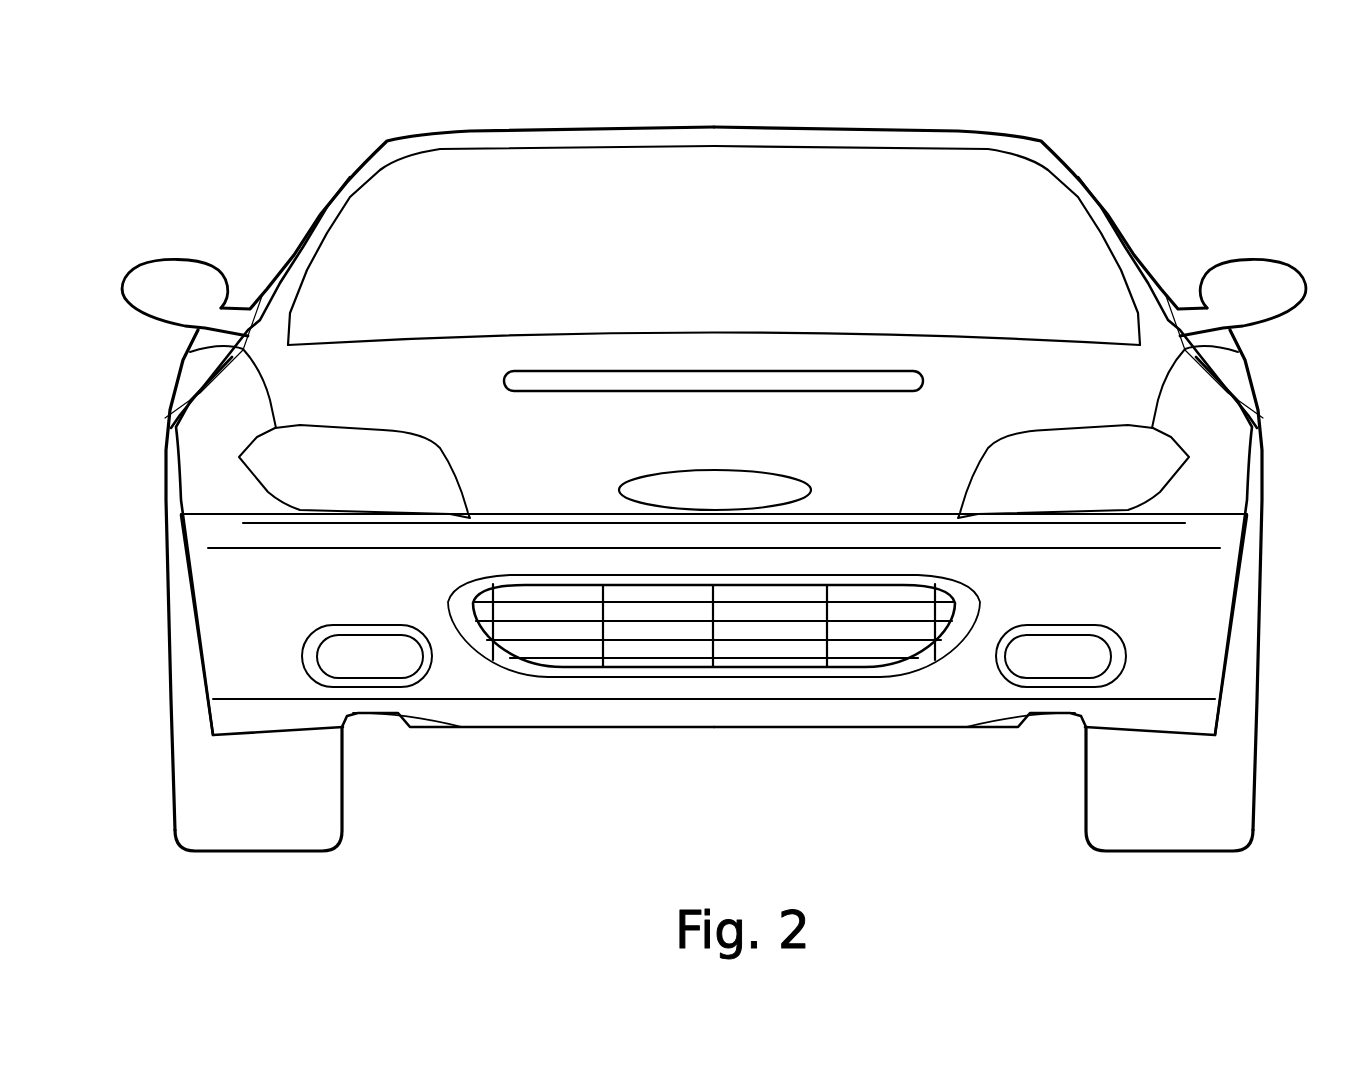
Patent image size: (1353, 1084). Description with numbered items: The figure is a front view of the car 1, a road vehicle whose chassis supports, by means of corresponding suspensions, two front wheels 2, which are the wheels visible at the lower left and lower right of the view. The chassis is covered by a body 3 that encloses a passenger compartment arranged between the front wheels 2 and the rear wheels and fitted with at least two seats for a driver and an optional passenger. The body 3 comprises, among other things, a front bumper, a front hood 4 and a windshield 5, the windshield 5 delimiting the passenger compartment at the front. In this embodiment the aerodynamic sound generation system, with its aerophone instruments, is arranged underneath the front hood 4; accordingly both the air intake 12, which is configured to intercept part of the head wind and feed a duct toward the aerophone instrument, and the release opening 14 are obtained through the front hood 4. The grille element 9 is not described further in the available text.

The car 1 is at (1180, 110).
The front wheels 2 is at (256, 806).
The body 3 is at (238, 128).
The front hood 4 is at (390, 388).
The windshield 5 is at (731, 230).
The radiator grille 9 is at (714, 626).
The air intake 12 is at (738, 489).
The release opening 14 is at (854, 381).